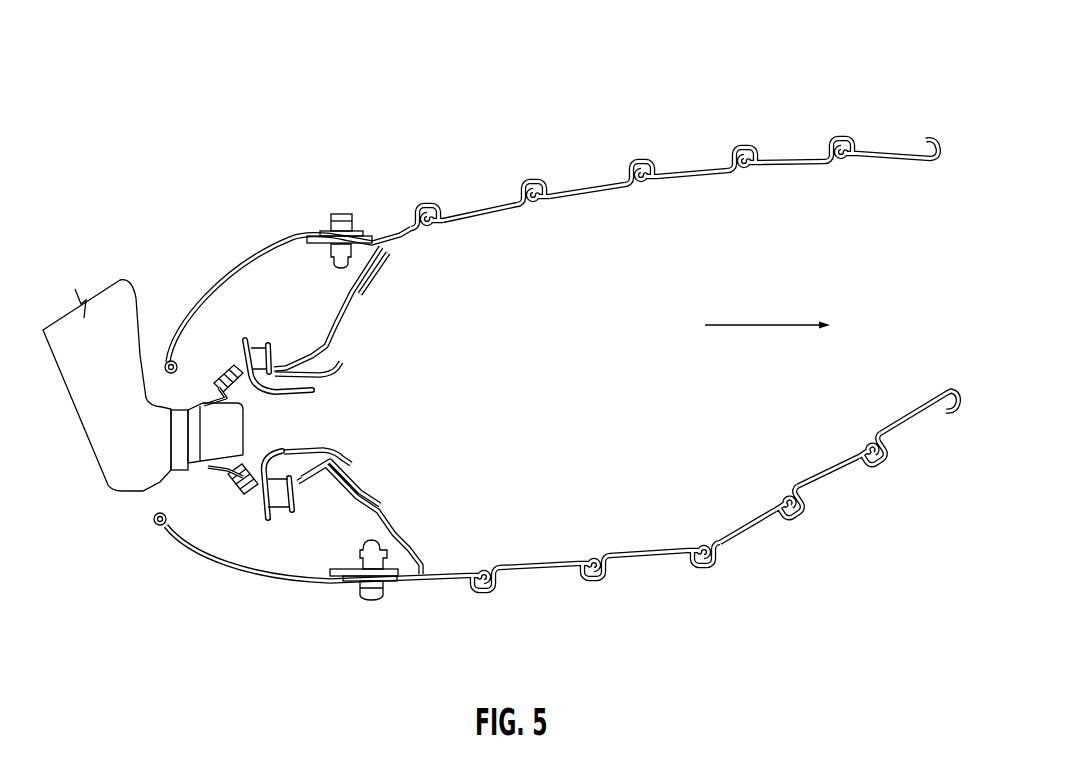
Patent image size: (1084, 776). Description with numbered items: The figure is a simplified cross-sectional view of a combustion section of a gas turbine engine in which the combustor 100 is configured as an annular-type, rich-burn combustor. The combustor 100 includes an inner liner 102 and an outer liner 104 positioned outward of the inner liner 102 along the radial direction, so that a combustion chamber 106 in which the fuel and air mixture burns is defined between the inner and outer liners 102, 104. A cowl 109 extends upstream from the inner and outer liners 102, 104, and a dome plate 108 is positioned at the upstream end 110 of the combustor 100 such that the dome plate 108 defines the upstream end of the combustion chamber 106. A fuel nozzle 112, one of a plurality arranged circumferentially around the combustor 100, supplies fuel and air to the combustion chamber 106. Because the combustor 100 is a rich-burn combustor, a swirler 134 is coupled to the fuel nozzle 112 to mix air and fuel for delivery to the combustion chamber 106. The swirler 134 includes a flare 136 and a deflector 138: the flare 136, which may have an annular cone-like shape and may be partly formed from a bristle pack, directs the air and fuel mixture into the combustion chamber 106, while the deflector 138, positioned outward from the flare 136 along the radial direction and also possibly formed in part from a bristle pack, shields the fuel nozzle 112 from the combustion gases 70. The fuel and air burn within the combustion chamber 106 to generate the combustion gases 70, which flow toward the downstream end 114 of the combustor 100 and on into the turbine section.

The combustion gases 70 is at (767, 328).
The combustor 100 is at (425, 130).
The inner liner 102 is at (670, 553).
The outer liner 104 is at (690, 168).
The combustion chamber 106 is at (597, 380).
The dome plate 108 is at (360, 407).
The cowl 109 is at (207, 296).
The upstream end 110 is at (128, 576).
The fuel nozzle 112 is at (118, 493).
The downstream end 114 is at (912, 90).
The swirler 134 is at (257, 326).
The flare 136 is at (337, 372).
The deflector 138 is at (343, 338).